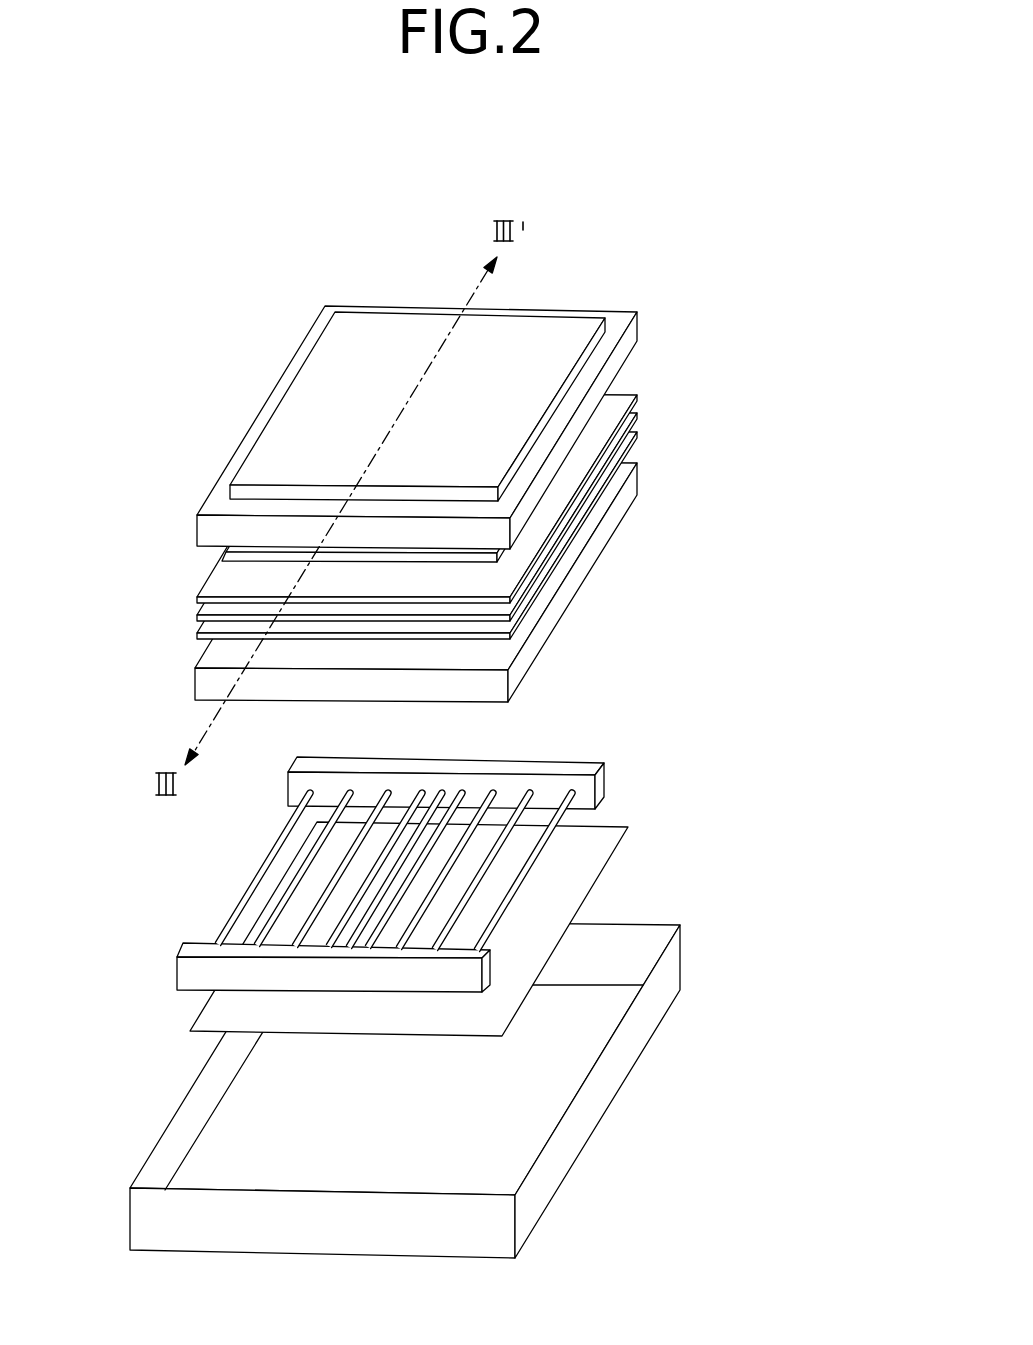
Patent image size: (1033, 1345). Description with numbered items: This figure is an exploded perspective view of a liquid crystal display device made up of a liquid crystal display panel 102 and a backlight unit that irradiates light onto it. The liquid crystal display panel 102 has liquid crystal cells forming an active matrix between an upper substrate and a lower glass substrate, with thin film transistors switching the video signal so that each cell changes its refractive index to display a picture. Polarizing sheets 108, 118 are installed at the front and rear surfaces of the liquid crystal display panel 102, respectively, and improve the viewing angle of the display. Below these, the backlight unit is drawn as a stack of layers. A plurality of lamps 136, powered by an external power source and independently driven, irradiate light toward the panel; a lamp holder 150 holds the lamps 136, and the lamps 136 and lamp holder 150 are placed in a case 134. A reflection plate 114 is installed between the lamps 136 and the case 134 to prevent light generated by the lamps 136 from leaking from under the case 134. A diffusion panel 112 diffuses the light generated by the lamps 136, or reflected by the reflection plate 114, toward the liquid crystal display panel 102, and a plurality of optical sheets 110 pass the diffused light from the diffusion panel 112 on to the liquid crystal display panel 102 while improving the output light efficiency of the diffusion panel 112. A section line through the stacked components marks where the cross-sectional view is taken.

The liquid crystal display panel 102 is at (625, 338).
The polarizing sheet 108 is at (572, 328).
The optical sheets 110 is at (657, 388).
The diffusion panel 112 is at (552, 613).
The reflection plate 114 is at (605, 848).
The polarizing sheet 118 is at (228, 556).
The case 134 is at (673, 968).
The lamps 136 is at (573, 818).
The lamp holder 150 is at (550, 770).